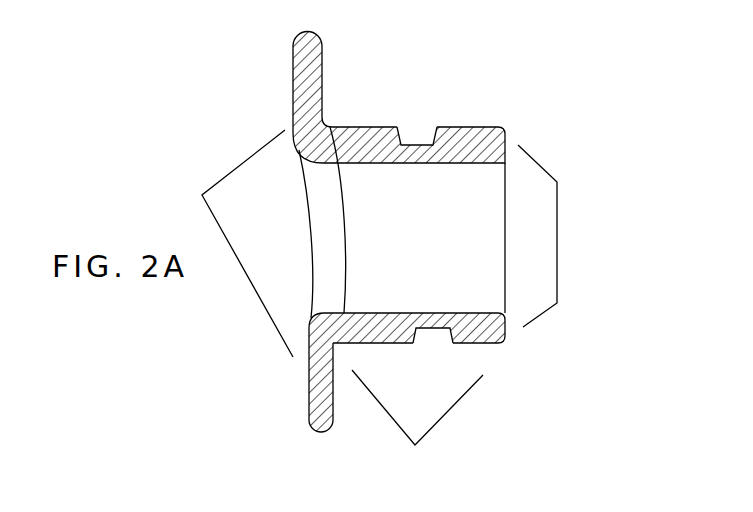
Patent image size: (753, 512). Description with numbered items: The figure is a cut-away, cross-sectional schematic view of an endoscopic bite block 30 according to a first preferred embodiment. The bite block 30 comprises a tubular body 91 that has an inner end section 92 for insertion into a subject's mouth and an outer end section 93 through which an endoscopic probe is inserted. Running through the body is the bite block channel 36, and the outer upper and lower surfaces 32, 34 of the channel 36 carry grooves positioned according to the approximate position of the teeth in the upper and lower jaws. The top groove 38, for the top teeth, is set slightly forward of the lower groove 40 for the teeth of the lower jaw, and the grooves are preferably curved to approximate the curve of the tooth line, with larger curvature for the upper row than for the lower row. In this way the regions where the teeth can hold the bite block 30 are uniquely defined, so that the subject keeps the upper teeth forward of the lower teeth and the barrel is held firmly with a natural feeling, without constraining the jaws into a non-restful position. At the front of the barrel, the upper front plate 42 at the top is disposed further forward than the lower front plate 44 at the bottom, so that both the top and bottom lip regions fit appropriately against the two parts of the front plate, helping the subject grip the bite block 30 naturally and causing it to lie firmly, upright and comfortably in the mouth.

The endoscopic bite block 30 is at (517, 62).
The outer upper surface 32 is at (505, 134).
The outer lower surface 34 is at (483, 343).
The bite block channel 36 is at (398, 250).
The top groove 38 is at (417, 138).
The lower groove 40 is at (432, 338).
The upper front plate 42 is at (293, 63).
The lower front plate 44 is at (307, 387).
The tubular body 91 is at (557, 237).
The inner end section 92 is at (417, 421).
The outer end section 93 is at (232, 243).